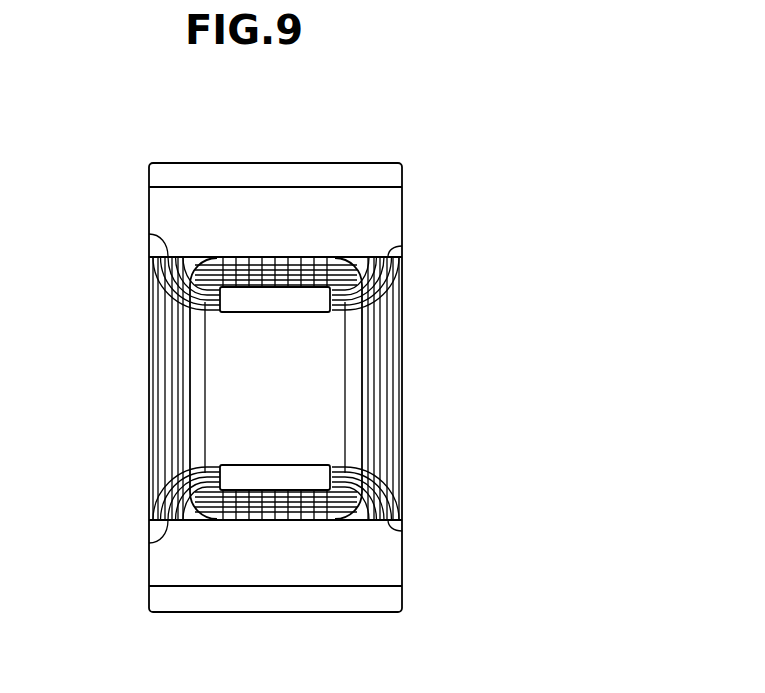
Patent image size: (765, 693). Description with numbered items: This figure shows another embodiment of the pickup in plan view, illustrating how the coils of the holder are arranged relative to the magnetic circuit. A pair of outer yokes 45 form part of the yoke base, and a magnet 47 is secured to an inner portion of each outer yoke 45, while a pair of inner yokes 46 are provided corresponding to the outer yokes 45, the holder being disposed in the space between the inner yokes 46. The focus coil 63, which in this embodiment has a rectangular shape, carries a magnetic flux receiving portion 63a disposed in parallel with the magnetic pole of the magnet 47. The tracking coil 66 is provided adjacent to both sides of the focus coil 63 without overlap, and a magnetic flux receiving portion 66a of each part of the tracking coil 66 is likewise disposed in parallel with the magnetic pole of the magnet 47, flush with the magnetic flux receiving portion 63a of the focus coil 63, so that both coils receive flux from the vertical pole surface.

The outer yoke 45 is at (395, 182).
The magnet 47 is at (400, 225).
The focus coil 63 is at (352, 437).
The magnetic flux receiving portion 63a is at (268, 257).
The tracking coil 66 is at (150, 337).
The magnetic flux receiving portion 66a is at (149, 233).
The inner yoke 46 is at (296, 313).